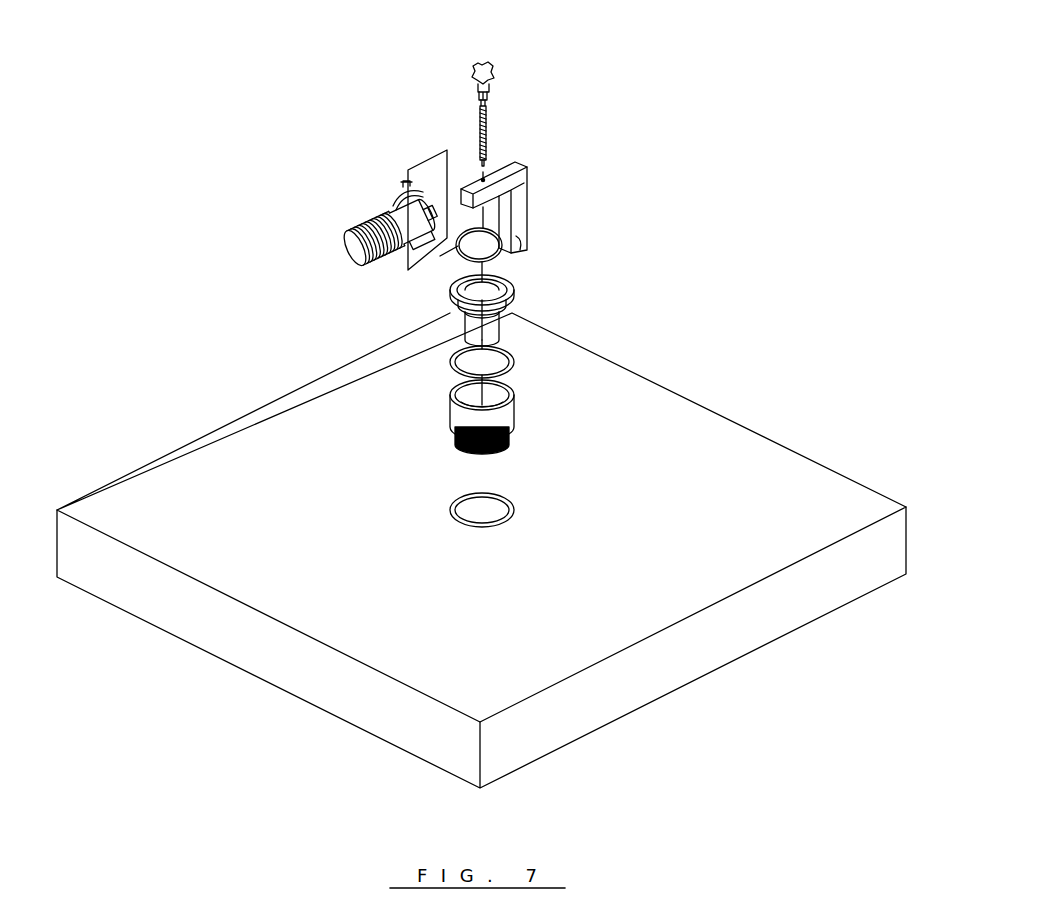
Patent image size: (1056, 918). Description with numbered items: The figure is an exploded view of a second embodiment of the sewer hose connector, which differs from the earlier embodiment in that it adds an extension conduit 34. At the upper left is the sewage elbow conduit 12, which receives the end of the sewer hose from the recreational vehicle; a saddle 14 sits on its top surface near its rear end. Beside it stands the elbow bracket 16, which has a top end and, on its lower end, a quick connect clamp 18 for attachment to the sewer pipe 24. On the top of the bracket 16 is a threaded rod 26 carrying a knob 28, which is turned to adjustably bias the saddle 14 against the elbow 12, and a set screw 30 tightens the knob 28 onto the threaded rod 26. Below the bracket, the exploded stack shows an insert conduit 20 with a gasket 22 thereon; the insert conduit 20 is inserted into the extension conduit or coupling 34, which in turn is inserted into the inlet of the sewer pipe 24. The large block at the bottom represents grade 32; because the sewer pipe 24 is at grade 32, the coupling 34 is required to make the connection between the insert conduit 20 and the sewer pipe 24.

The sewage elbow conduit 12 is at (348, 230).
The saddle 14 is at (397, 193).
The elbow bracket 16 is at (527, 163).
The quick connect clamp 18 is at (525, 262).
The insert conduit 20 is at (517, 295).
The gasket 22 is at (516, 364).
The sewer pipe 24 is at (510, 512).
The threaded rod 26 is at (480, 100).
The knob 28 is at (477, 67).
The set screw 30 is at (490, 82).
The grade 32 is at (910, 507).
The extension conduit 34 is at (516, 398).